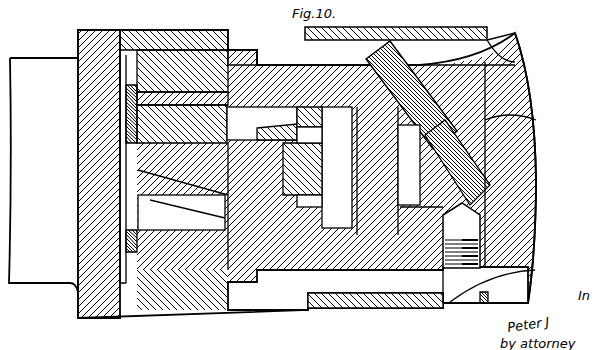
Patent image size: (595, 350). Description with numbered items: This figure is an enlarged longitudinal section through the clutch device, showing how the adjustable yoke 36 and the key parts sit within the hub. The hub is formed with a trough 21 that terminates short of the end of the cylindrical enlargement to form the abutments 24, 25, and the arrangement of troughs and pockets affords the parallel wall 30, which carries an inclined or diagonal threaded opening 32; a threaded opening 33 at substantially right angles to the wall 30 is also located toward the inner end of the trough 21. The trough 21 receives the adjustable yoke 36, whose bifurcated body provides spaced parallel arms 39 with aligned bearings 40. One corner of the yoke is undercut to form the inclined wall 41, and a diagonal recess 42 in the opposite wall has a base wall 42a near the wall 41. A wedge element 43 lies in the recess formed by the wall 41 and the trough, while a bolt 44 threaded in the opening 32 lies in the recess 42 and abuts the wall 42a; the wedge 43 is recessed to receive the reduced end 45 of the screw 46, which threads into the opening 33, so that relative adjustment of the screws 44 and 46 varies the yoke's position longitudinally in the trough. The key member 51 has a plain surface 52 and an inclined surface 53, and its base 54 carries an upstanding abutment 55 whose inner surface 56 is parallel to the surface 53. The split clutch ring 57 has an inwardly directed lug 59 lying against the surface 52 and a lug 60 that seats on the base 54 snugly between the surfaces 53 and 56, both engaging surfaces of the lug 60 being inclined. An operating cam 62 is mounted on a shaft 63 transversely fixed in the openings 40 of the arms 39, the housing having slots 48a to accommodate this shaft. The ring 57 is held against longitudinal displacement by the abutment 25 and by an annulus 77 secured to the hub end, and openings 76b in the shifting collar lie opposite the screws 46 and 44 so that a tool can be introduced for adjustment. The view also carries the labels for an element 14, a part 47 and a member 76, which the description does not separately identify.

The annulus 77 is at (100, 118).
The clutch ring 57 is at (130, 60).
The key member 51 is at (155, 95).
The plain surface 52 is at (180, 105).
The casing 14 is at (215, 32).
The wall 30 is at (295, 120).
The lug 59 is at (200, 50).
The base 54 is at (140, 150).
The bearings 40 is at (330, 118).
The bolt 44 is at (437, 27).
The threaded opening 32 is at (515, 33).
The screw 46 is at (475, 315).
The shaft 63 is at (358, 250).
The chamber 47 is at (418, 232).
The abutment 24 is at (520, 165).
The reduced end 45 is at (490, 212).
The wedge element 43 is at (500, 186).
The inclined wall 41 is at (535, 150).
The base wall 42a is at (520, 63).
The diagonal recess 42 is at (535, 88).
The adjustable yoke 36 is at (535, 107).
The inclined surface 53 is at (180, 232).
The abutment 55 is at (188, 240).
The inner surface 56 is at (207, 242).
The partition wall 76 is at (226, 238).
The lug 60 is at (243, 268).
The abutment 25 is at (282, 285).
The slots 48a is at (318, 300).
The arms 39 is at (390, 262).
The operating cam 62 is at (410, 312).
The trough 21 is at (447, 282).
The threaded opening 33 is at (500, 236).
The openings 76b is at (535, 270).